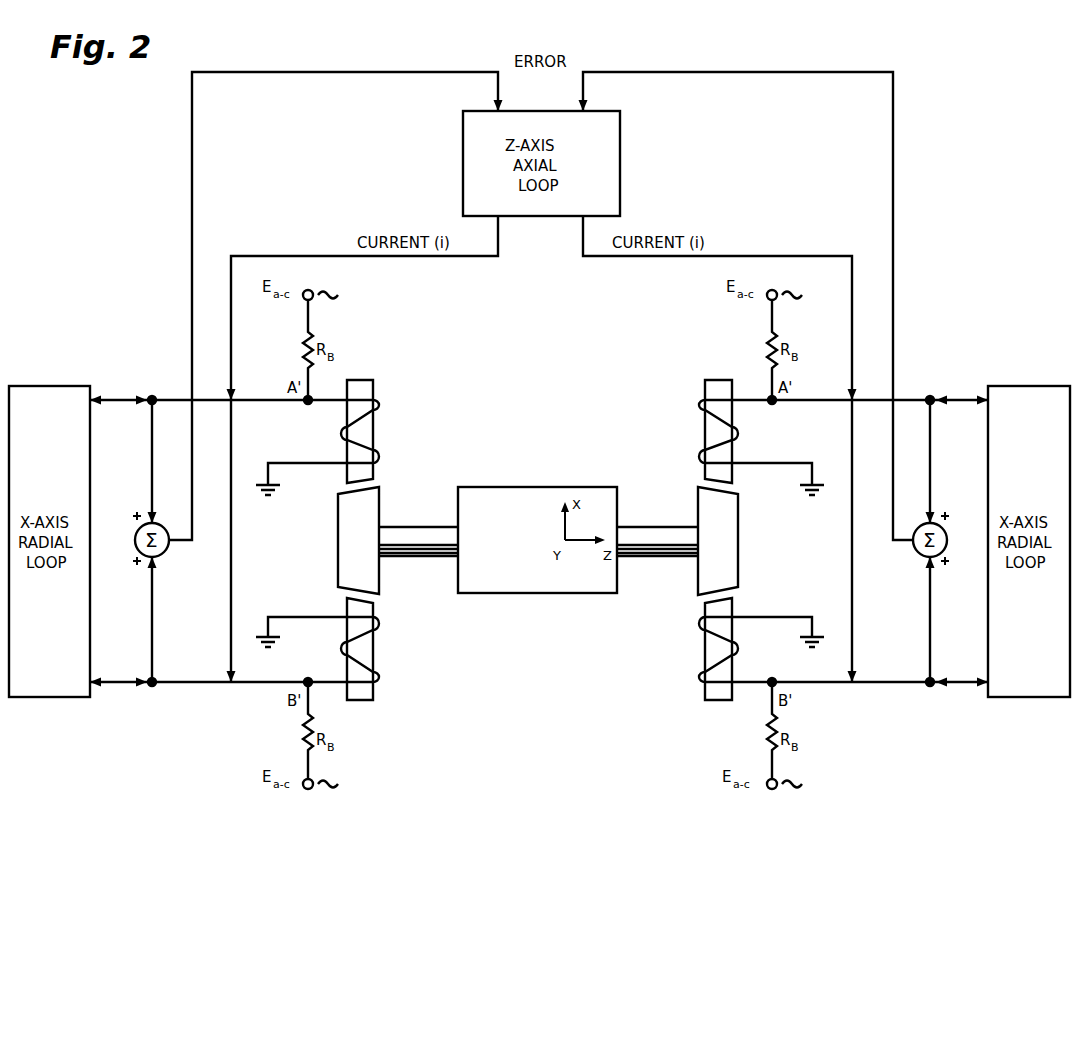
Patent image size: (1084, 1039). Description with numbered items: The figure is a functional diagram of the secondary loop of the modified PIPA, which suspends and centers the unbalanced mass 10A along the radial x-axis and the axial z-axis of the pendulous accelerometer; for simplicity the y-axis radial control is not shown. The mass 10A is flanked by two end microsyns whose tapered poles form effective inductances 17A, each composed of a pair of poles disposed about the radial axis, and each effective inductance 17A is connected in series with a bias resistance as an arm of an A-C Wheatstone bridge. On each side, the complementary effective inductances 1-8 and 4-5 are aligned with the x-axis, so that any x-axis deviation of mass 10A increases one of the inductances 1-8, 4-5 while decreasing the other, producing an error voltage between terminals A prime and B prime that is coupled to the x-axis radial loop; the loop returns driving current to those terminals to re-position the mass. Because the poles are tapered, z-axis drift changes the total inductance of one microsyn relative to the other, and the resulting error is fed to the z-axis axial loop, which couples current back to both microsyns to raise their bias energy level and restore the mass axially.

The mass 10A is at (538, 541).
The effective inductance 17A is at (539, 540).
The effective inductance L1-8 1-8 is at (539, 431).
The effective inductance L4-5 4-5 is at (539, 649).